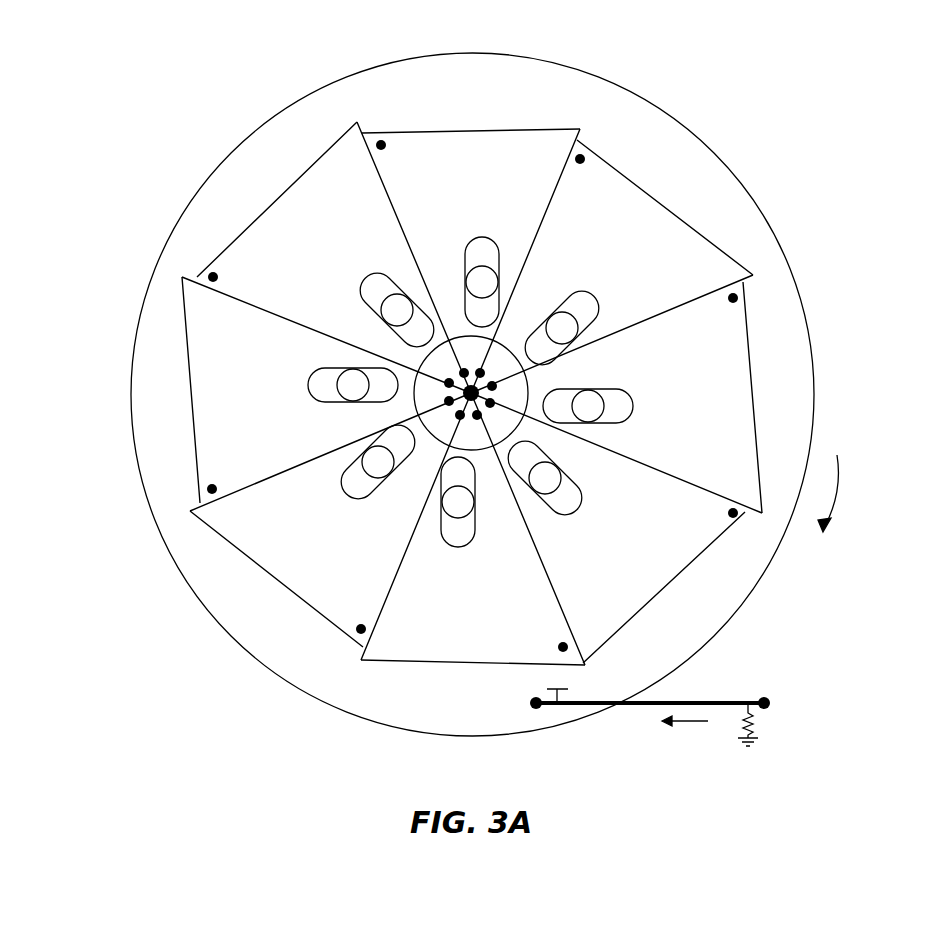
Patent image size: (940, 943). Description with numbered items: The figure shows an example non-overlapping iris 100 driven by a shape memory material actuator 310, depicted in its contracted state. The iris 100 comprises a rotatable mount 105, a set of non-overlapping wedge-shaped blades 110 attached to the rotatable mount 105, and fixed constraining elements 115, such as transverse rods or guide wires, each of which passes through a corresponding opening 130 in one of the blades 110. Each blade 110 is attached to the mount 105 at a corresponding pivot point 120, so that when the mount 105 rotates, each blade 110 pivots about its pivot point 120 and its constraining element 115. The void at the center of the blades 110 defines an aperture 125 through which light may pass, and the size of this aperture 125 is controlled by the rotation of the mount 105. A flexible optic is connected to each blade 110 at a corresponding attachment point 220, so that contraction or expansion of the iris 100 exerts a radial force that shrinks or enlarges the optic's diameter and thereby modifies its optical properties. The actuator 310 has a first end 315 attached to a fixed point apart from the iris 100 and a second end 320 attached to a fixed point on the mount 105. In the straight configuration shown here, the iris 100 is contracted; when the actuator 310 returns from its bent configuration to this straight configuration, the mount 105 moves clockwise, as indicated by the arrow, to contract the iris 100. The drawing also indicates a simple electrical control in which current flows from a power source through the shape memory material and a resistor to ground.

The iris 100 is at (828, 142).
The rotatable mount 105 is at (706, 617).
The wedge-shaped blades 110 is at (673, 540).
The constraining elements 115 is at (604, 408).
The pivot point 120 is at (736, 296).
The aperture 125 is at (463, 395).
The opening 130 is at (584, 308).
The attachment point 220 is at (446, 384).
The actuator 310 is at (732, 702).
The first end 315 is at (767, 706).
The second end 320 is at (535, 708).